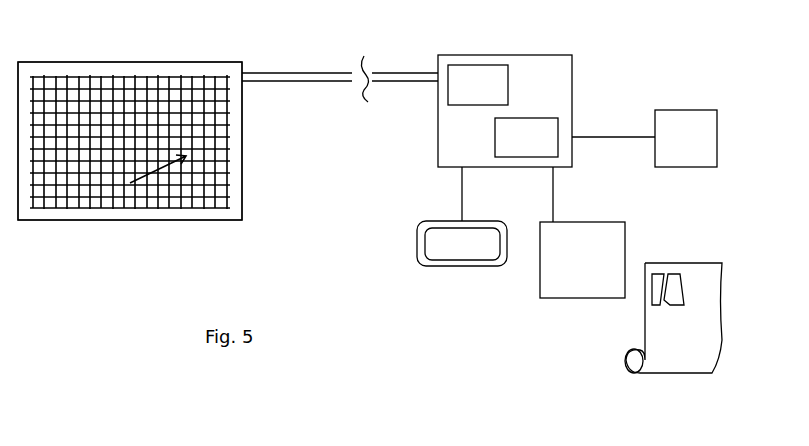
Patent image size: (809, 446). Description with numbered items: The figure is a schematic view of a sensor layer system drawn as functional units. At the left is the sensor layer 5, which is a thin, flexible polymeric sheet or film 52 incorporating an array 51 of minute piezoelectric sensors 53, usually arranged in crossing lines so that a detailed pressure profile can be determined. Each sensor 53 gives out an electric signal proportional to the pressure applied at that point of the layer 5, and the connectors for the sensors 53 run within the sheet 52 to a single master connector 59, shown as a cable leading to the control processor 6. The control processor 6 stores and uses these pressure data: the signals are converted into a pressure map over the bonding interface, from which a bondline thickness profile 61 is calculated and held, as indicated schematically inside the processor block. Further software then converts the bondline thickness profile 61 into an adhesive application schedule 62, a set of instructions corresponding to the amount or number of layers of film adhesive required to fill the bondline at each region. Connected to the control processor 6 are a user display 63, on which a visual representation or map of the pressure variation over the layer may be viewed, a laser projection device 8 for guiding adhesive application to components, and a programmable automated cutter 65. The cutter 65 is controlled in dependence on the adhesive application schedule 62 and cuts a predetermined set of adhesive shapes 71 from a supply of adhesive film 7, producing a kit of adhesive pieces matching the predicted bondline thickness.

The sensor layer 5 is at (36, 250).
The array 51 is at (196, 205).
The polymeric sheet 52 is at (63, 66).
The piezoelectric sensor 53 is at (190, 88).
The master connector 59 is at (316, 73).
The control processor 6 is at (450, 55).
The bondline thickness profile 61 is at (490, 88).
The adhesive application schedule 62 is at (536, 134).
The user display 63 is at (450, 268).
The cutter 65 is at (565, 298).
The adhesive film 7 is at (712, 373).
The adhesive shapes 71 is at (676, 290).
The laser projection device 8 is at (712, 158).